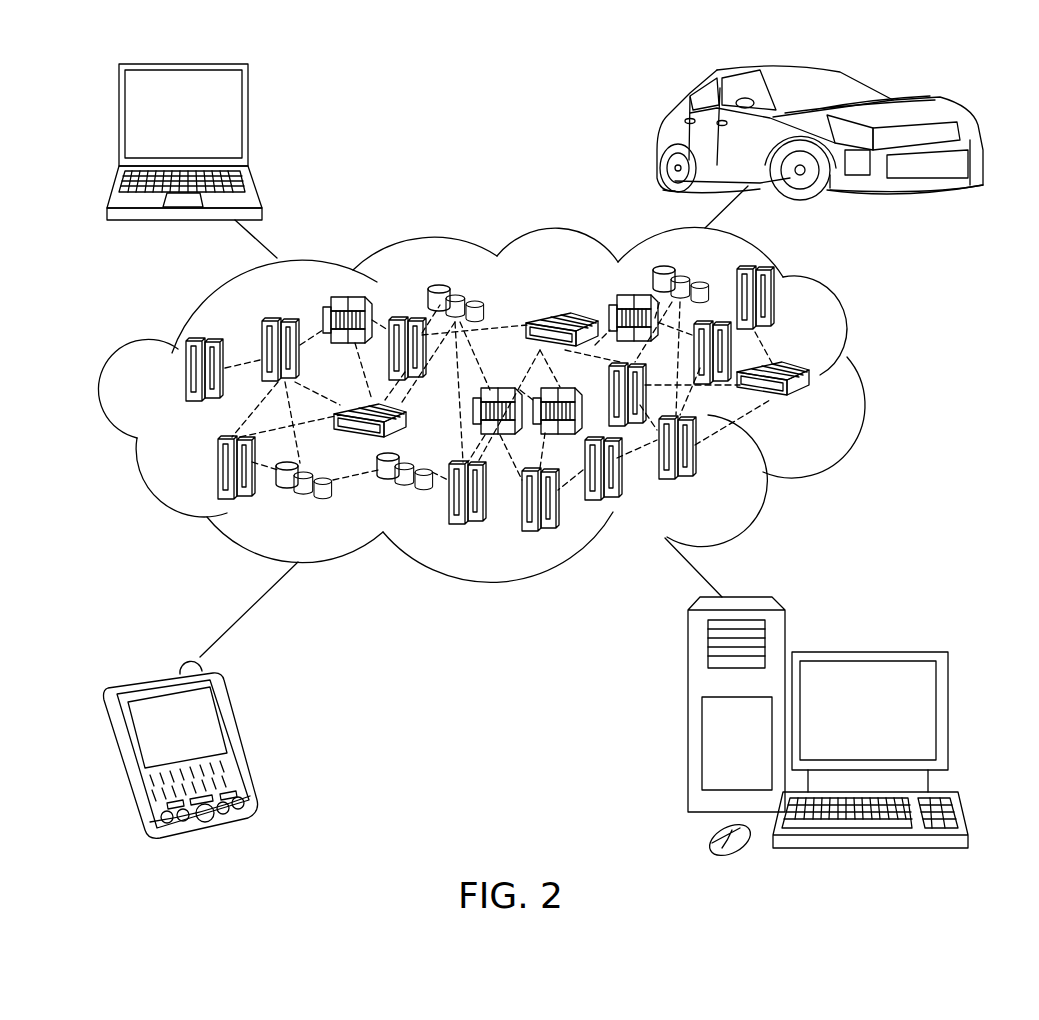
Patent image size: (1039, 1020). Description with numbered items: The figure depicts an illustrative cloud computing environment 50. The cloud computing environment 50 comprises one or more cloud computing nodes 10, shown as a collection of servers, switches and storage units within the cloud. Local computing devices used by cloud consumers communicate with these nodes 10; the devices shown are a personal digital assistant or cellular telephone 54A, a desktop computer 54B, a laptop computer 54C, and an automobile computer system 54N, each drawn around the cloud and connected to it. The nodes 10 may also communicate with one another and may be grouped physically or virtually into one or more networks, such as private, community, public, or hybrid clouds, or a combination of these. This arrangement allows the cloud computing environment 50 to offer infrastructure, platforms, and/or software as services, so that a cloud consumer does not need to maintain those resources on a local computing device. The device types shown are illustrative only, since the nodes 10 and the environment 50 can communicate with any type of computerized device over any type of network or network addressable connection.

The cloud computing node 10 is at (815, 408).
The cloud computing environment 50 is at (868, 378).
The personal digital assistant or cellular telephone 54A is at (238, 739).
The desktop computer 54B is at (866, 652).
The laptop computer 54C is at (248, 122).
The automobile computer system 54N is at (661, 135).